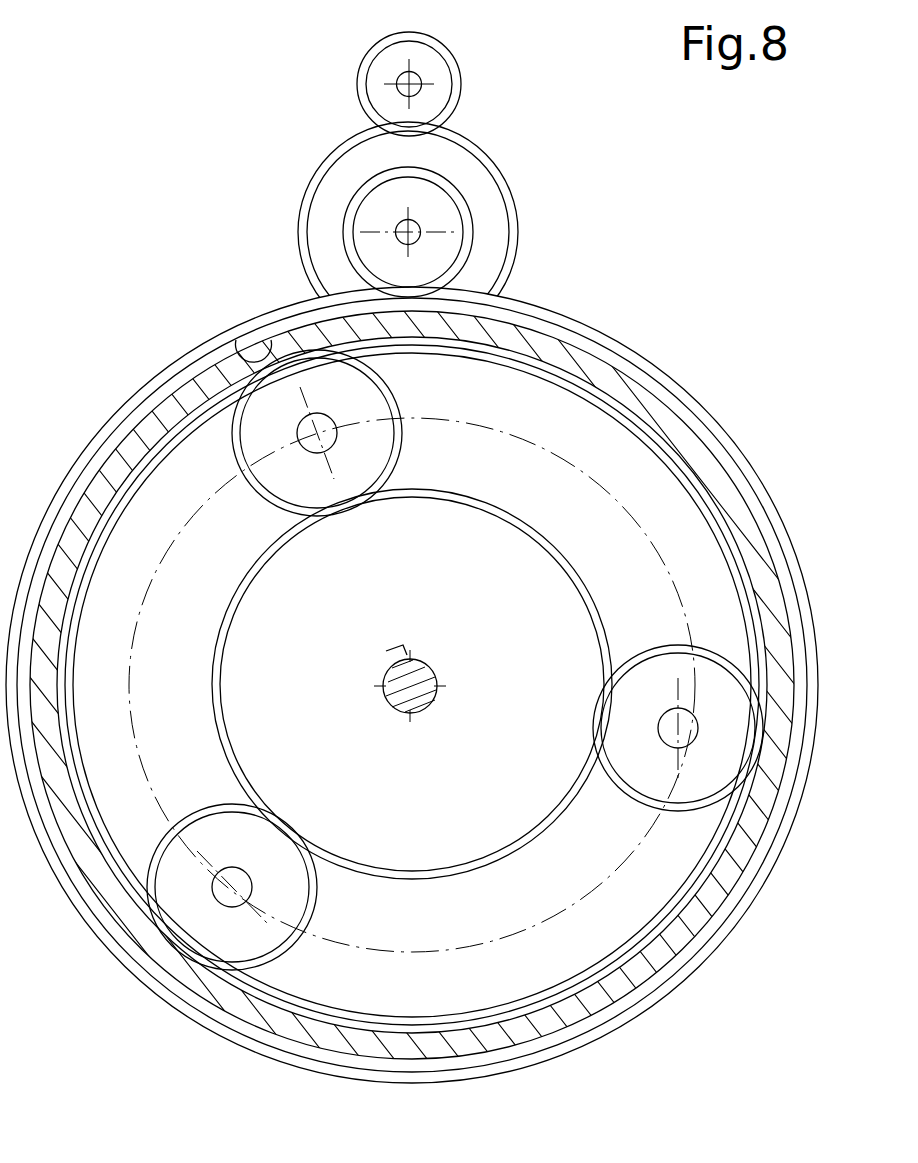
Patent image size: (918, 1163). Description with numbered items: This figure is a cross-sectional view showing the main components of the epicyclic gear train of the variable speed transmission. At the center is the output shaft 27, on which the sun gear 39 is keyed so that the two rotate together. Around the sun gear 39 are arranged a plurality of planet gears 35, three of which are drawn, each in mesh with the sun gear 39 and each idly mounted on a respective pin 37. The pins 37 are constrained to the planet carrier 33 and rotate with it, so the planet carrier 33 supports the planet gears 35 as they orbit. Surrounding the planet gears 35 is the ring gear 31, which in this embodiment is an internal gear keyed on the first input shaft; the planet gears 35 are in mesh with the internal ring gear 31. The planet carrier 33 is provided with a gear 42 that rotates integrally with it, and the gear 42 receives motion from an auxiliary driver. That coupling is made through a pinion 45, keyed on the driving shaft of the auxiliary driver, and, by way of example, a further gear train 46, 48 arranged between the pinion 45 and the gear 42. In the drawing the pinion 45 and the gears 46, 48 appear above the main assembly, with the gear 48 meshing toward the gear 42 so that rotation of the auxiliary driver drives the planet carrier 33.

The output shaft 27 is at (388, 700).
The ring gear 31 is at (660, 410).
The planet carrier 33 is at (262, 350).
The planet gear 35 is at (358, 457).
The pin 37 is at (327, 423).
The sun gear 39 is at (512, 548).
The gear 42 is at (608, 340).
The pinion 45 is at (388, 67).
The gear of further gear train 46 is at (500, 157).
The gear of further gear train 48 is at (372, 222).